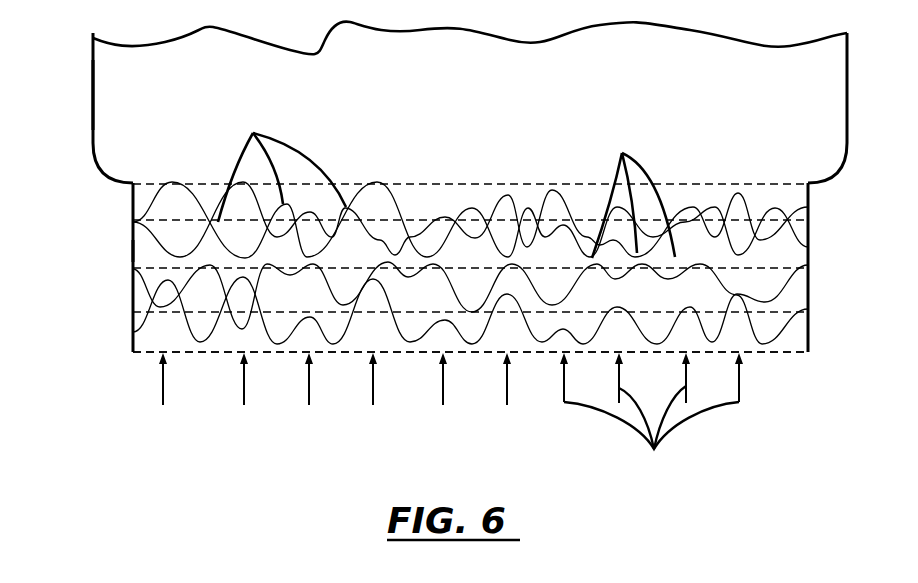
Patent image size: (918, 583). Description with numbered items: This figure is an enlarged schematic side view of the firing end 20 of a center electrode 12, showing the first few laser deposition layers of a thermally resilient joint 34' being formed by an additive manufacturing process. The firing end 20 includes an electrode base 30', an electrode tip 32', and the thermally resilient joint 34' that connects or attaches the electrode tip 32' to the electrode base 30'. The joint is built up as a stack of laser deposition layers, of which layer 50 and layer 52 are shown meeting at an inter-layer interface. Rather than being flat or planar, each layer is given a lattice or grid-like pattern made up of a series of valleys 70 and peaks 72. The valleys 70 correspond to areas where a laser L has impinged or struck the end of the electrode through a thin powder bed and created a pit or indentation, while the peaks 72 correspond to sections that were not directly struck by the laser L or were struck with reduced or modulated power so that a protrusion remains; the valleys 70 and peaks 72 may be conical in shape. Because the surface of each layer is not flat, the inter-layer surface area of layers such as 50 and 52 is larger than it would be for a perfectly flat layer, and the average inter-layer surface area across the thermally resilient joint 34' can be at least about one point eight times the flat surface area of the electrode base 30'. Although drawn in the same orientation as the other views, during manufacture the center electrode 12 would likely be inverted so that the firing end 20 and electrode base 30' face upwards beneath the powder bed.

The center electrode 12 is at (805, 82).
The electrode base 30' is at (83, 97).
The firing end 20 is at (102, 207).
The thermally resilient joint 34' is at (86, 262).
The laser deposition layer 50 is at (784, 206).
The laser deposition layer 52 is at (784, 258).
The valleys 70 is at (282, 163).
The peaks 72 is at (633, 191).
The electrode tip 32' is at (504, 338).
The laser L is at (451, 417).